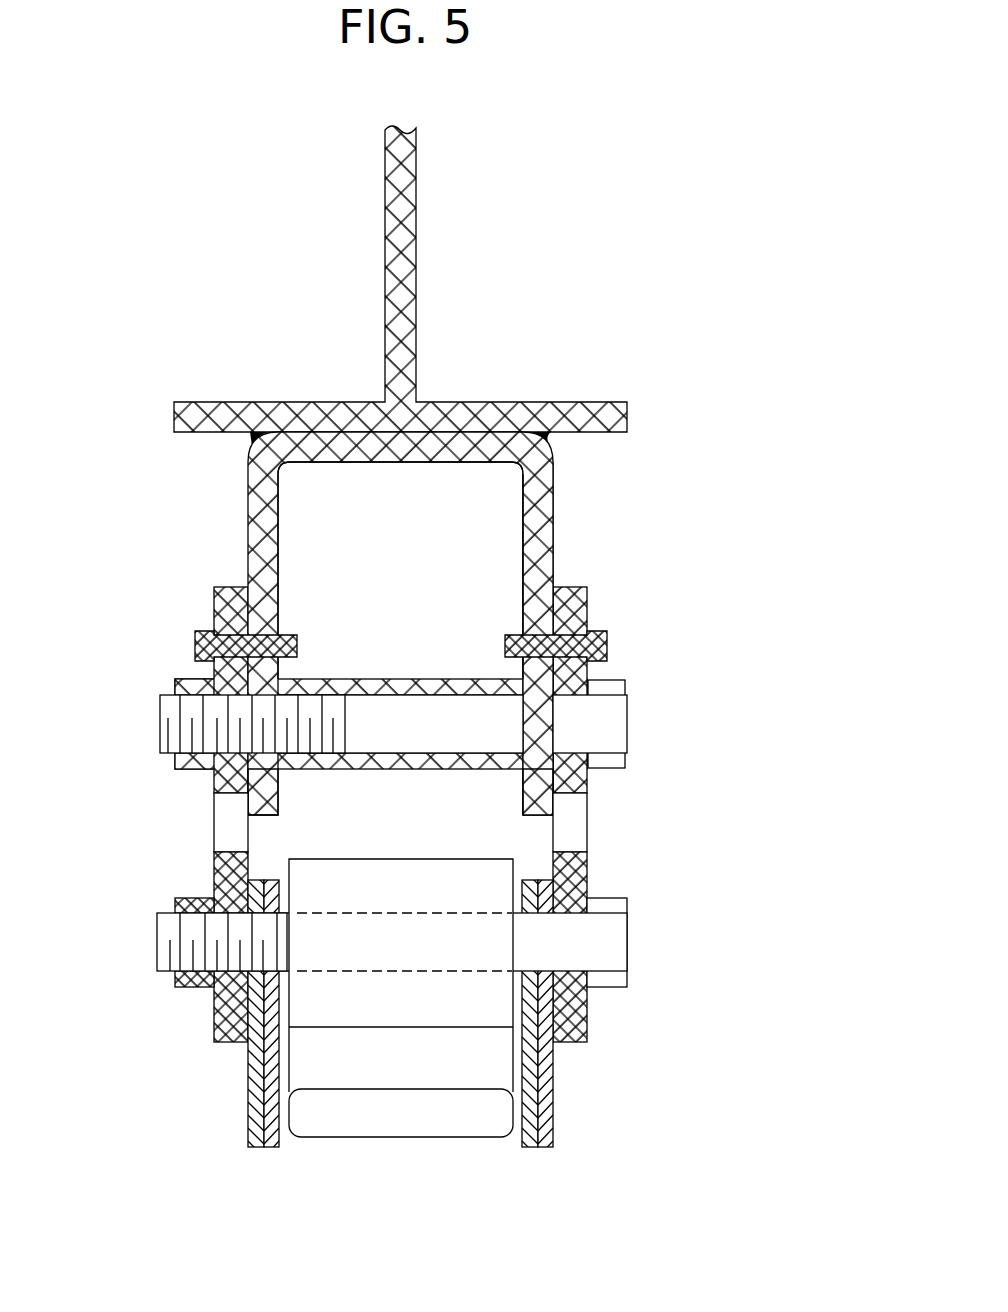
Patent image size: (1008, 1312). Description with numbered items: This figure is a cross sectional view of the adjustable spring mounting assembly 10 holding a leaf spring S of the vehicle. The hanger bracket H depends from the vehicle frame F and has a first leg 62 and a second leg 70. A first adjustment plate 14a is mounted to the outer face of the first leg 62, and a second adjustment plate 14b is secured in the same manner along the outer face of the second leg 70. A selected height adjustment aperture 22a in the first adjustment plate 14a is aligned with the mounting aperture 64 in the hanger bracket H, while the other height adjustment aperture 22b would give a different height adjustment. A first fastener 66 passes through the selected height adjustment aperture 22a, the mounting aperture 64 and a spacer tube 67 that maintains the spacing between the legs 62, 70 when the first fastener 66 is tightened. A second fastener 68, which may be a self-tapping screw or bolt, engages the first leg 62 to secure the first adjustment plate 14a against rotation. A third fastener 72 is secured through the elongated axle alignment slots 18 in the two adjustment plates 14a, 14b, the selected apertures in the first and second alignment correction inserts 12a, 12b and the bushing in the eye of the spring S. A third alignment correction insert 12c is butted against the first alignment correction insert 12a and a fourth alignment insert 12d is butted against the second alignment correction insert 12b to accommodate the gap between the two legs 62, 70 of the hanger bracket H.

The adjustable spring mounting assembly 10 is at (463, 689).
The first alignment correction insert 12a is at (530, 1147).
The second alignment correction insert 12b is at (273, 1147).
The third alignment correction insert 12c is at (555, 1110).
The fourth alignment insert 12d is at (248, 1123).
The first adjustment plate 14a is at (580, 607).
The second adjustment plate 14b is at (217, 608).
The elongated axle alignment slot 18 is at (567, 915).
The height adjustment aperture 22a is at (570, 750).
The height adjustment aperture 22b is at (577, 827).
The first leg 62 is at (545, 533).
The mounting aperture 64 is at (530, 697).
The first fastener 66 is at (613, 722).
The spacer tube 67 is at (380, 678).
The second fastener 68 is at (193, 652).
The second leg 70 is at (247, 530).
The third fastener 72 is at (187, 900).
The vehicle frame F is at (412, 252).
The hanger bracket H is at (372, 453).
The leaf spring S is at (418, 992).